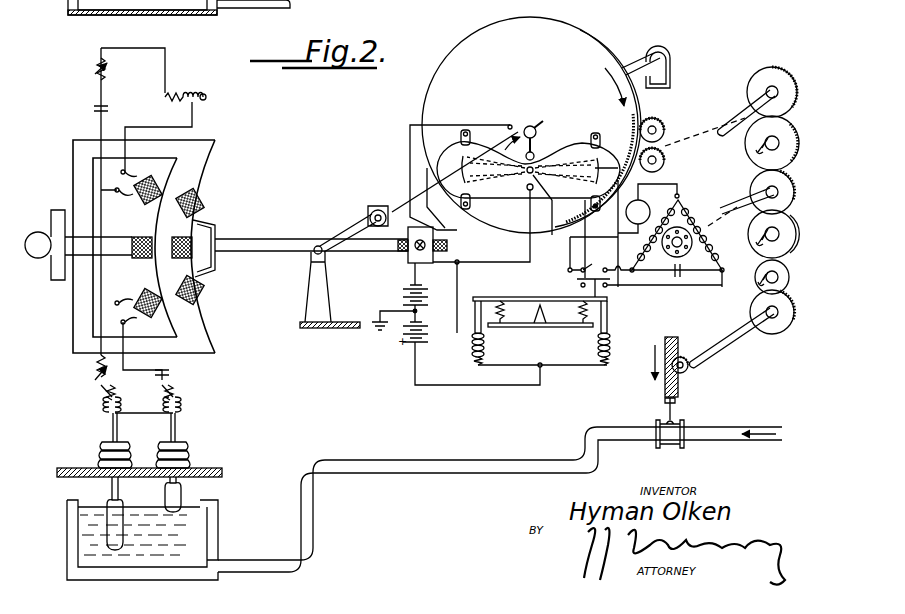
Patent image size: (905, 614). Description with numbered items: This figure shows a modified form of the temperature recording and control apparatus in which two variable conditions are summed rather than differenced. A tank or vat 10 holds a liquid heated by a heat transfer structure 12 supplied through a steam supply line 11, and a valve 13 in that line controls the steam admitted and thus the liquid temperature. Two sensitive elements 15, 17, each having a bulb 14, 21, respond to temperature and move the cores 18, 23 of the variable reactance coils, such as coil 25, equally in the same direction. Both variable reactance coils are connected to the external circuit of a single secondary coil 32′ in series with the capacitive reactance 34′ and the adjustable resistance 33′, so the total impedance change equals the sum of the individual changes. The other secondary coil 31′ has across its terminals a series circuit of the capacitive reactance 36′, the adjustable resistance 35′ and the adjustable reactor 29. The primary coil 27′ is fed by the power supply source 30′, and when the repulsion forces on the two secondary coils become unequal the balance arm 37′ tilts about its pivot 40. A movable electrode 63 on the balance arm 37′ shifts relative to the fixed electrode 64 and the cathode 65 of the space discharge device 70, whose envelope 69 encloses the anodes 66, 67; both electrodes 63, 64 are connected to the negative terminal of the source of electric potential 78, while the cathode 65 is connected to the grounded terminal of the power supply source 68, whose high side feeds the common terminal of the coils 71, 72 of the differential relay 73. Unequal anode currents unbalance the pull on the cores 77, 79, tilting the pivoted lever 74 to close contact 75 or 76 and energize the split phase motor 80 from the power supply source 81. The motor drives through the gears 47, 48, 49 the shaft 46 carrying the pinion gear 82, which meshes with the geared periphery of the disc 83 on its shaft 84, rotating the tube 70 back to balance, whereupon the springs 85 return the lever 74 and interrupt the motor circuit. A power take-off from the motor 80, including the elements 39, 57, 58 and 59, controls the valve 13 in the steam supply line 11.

The tank 10 is at (208, 500).
The steam supply line 11 is at (447, 463).
The heat transfer structure 12 is at (248, 517).
The valve 13 is at (658, 422).
The bulb 14 is at (107, 510).
The sensitive element 15 is at (110, 427).
The second sensitive element 17 is at (178, 427).
The core 18 is at (107, 406).
The bulb 21 is at (165, 496).
The core 23 is at (181, 406).
The variable reactance coil 25 is at (178, 392).
The primary coil 27′ is at (138, 237).
The adjustable reactor 29 is at (186, 95).
The power supply source 30′ is at (45, 262).
The secondary coil 31′ is at (198, 192).
The secondary coil 32′ is at (198, 302).
The adjustable resistance 33′ is at (95, 375).
The capacitive reactance 34′ is at (170, 372).
The adjustable resistance 35′ is at (96, 72).
The capacitive reactance 36′ is at (93, 108).
The balance arm 37′ is at (252, 236).
The roller 39 is at (772, 334).
The pivot 40 is at (305, 285).
The shaft 46 is at (722, 112).
The gear 47 is at (752, 192).
The gear 48 is at (745, 148).
The gear 49 is at (750, 80).
The rack 57 is at (680, 385).
The pinion 58 is at (685, 357).
The shaft 59 is at (706, 362).
The movable electrode 63 is at (538, 142).
The fixed electrode 64 is at (527, 190).
The cathode 65 is at (536, 175).
The anode 66 is at (485, 165).
The anode 67 is at (577, 165).
The power supply source 68 is at (400, 340).
The envelope 69 is at (470, 132).
The space discharge device 70 is at (570, 140).
The winding 71 is at (472, 364).
The winding 72 is at (604, 366).
The differential relay 73 is at (608, 289).
The pivoted lever 74 is at (556, 328).
The contact 75 is at (585, 268).
The contact 76 is at (581, 286).
The core 77 is at (472, 350).
The source of electric potential 78 is at (403, 292).
The core 79 is at (609, 345).
The split phase motor 80 is at (692, 272).
The power supply source 81 is at (648, 206).
The pinion gear 82 is at (662, 120).
The disc 83 is at (568, 55).
The shaft 84 is at (633, 60).
The springs 85 is at (584, 327).